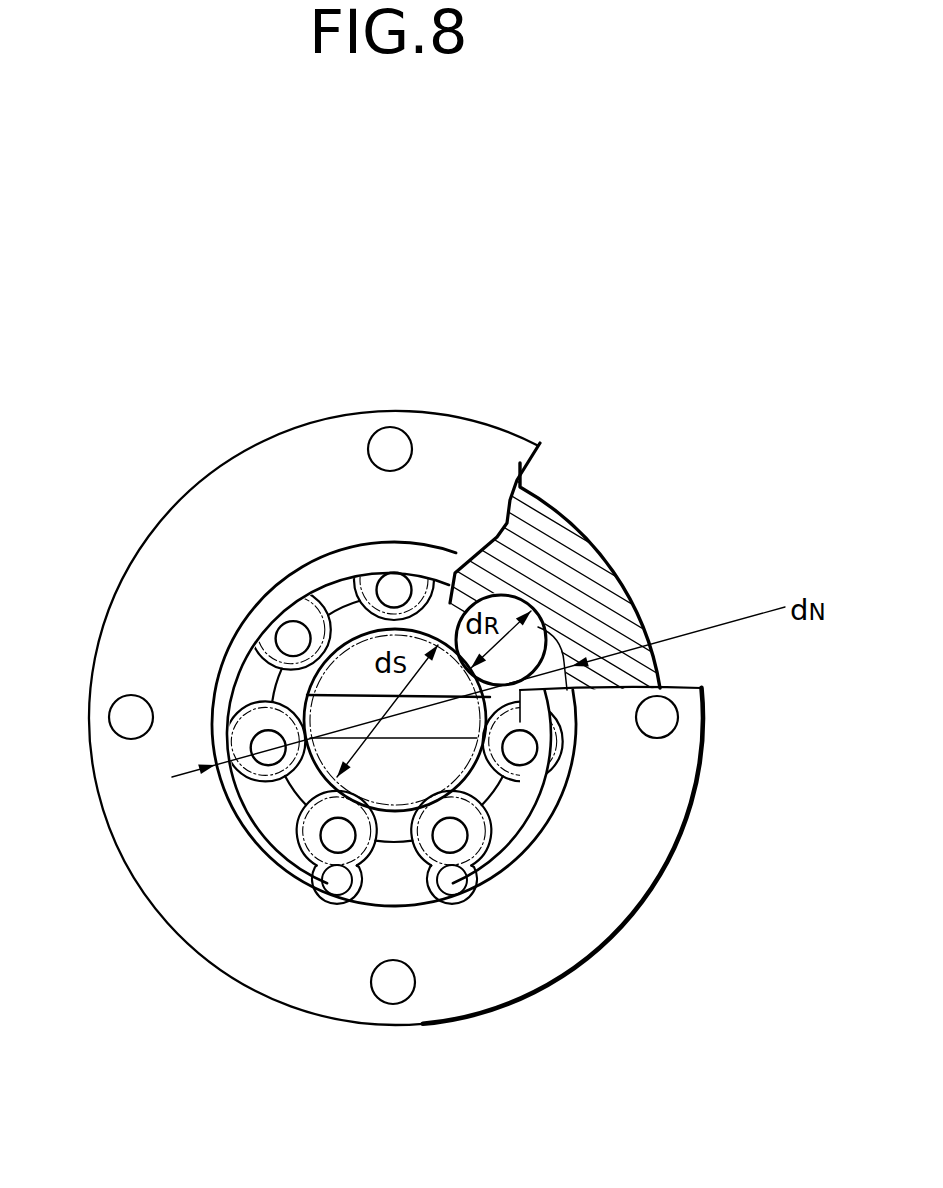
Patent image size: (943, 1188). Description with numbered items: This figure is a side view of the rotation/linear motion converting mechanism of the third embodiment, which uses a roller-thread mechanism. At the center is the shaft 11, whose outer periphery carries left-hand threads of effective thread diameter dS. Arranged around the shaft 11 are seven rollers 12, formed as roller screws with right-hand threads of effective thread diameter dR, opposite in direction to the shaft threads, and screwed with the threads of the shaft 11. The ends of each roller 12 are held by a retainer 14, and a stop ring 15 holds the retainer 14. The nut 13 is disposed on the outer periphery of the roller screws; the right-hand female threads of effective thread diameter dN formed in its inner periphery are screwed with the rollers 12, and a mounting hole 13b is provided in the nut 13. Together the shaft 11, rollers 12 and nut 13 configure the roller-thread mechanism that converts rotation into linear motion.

The shaft 11 is at (327, 763).
The rollers 12 is at (273, 663).
The nut 13 is at (247, 488).
The mounting hole 13b is at (383, 430).
The retainer 14 is at (492, 836).
The stop ring 15 is at (547, 806).